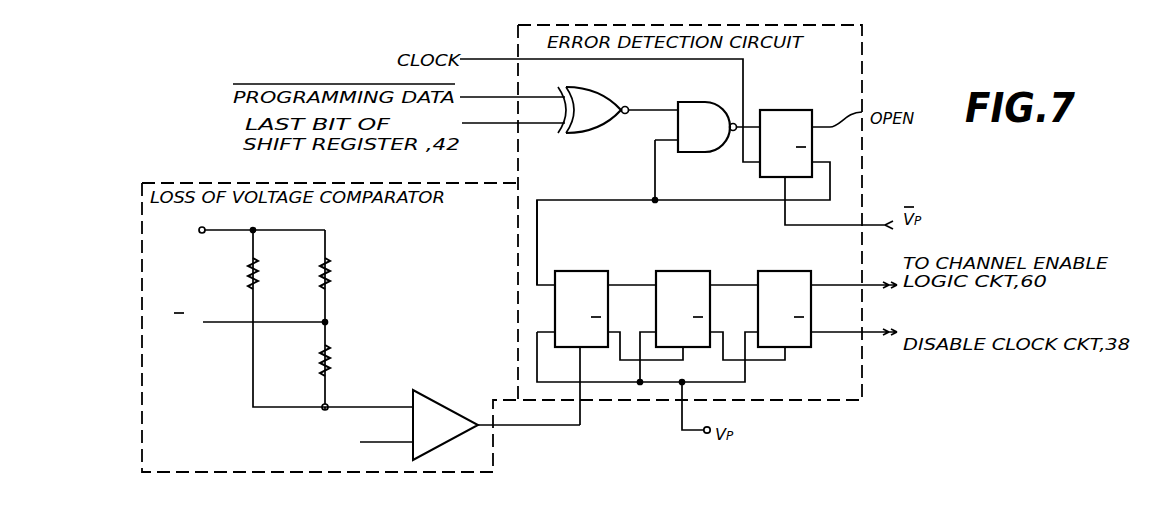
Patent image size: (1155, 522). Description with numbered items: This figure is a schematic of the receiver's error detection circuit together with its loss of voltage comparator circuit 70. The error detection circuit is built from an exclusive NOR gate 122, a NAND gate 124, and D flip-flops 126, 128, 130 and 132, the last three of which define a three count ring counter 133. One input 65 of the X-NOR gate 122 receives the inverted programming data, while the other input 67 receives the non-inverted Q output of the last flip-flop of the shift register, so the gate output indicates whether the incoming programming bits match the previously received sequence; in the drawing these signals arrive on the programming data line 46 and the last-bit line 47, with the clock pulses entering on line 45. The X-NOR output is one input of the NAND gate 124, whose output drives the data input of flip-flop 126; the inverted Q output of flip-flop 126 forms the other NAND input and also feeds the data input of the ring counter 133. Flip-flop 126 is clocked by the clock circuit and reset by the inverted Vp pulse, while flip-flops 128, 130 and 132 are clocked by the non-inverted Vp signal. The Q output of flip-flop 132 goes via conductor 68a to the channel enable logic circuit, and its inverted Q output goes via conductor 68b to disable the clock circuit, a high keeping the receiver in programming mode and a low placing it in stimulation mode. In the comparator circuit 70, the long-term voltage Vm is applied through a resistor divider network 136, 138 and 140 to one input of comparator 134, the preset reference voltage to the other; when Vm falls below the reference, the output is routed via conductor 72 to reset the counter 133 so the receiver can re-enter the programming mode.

The clock line 45 is at (505, 57).
The programming data line 46 is at (505, 95).
The last bit of shift register line 47 is at (505, 127).
The input of the X-NOR gate 65 is at (566, 88).
The input of the X-NOR gate 67 is at (567, 133).
The exclusive NOR gate 122 is at (618, 113).
The NAND gate 124 is at (693, 115).
The D flip-flop 126 is at (788, 112).
The D flip-flop 128 is at (578, 276).
The D flip-flop 130 is at (678, 276).
The D flip-flop 132 is at (785, 276).
The three count ring counter 133 is at (568, 235).
The comparator 134 is at (437, 415).
The resistor 136 is at (249, 270).
The resistor 138 is at (330, 272).
The resistor 140 is at (330, 360).
The conductor 68a is at (852, 284).
The conductor 68b is at (845, 333).
The loss of voltage comparator circuit 70 is at (275, 341).
The conductor 72 is at (545, 427).